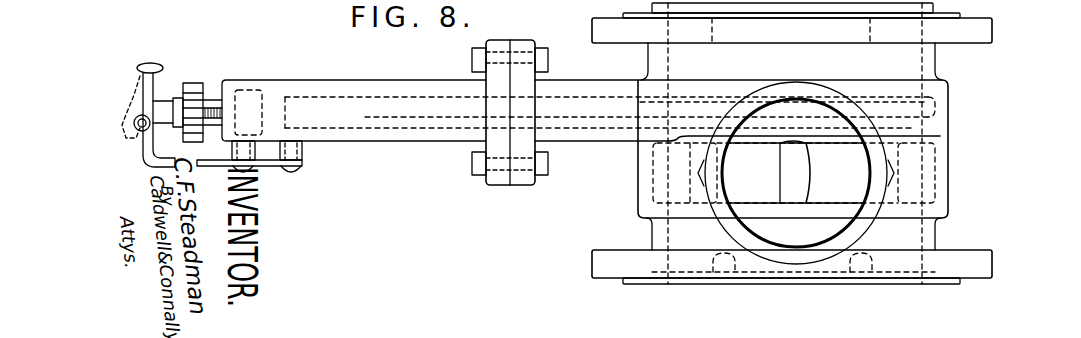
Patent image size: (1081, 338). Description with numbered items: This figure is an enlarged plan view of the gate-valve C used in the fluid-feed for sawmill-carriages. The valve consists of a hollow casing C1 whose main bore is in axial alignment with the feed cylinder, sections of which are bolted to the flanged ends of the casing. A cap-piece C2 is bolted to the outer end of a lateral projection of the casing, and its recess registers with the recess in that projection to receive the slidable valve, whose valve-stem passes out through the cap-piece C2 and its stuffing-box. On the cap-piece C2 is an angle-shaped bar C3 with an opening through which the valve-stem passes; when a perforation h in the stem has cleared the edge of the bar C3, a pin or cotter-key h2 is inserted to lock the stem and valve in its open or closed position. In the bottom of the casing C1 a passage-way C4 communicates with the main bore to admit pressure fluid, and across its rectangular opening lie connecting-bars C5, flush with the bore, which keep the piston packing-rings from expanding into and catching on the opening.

The gate-valve C is at (598, 134).
The hollow casing C1 is at (905, 62).
The cap-piece C2 is at (350, 112).
The angle-shaped bar C3 is at (152, 90).
The passage-way C4 is at (796, 173).
The connecting-bars C5 is at (797, 164).
The perforation h is at (154, 89).
The pin or cotter-key h2 is at (125, 97).